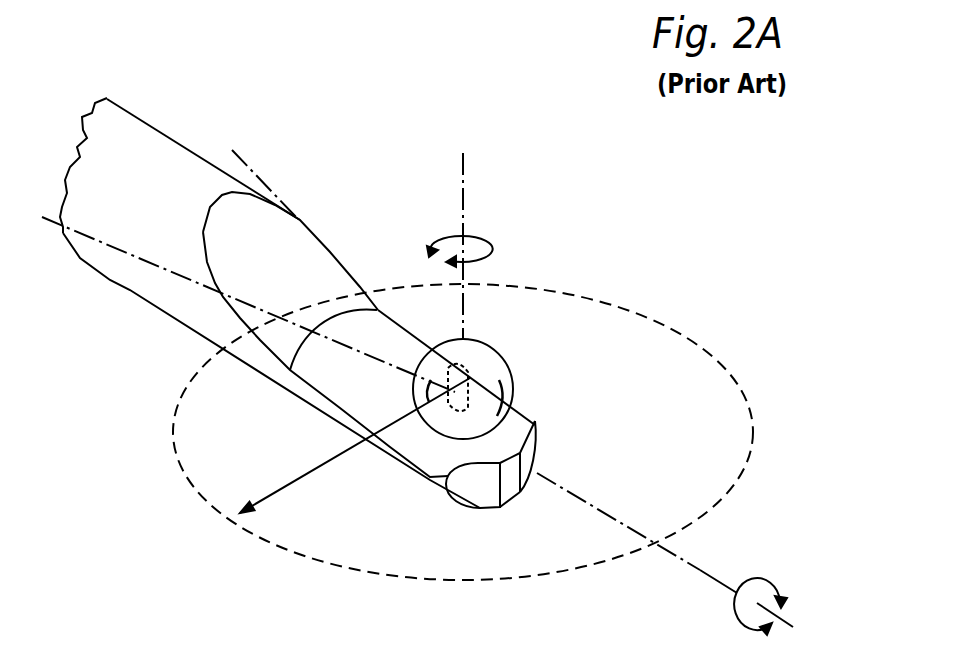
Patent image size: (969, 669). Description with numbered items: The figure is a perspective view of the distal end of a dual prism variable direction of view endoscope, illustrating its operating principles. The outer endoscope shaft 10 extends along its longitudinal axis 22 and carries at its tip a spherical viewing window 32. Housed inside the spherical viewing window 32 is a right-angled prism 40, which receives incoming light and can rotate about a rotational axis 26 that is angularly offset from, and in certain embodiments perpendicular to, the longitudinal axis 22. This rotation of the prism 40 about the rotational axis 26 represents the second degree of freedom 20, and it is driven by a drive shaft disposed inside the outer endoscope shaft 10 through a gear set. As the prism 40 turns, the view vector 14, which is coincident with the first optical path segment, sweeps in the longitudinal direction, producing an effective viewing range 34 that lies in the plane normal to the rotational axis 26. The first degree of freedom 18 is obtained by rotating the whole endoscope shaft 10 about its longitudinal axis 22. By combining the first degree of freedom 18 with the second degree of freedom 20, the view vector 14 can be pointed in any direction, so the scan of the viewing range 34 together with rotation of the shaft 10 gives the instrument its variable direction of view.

The outer endoscope shaft 10 is at (180, 155).
The view vector 14 is at (309, 477).
The first degree of freedom 18 is at (737, 607).
The second degree of freedom 20 is at (492, 244).
The longitudinal axis 22 is at (694, 560).
The rotational axis 26 is at (466, 184).
The spherical viewing window 32 is at (518, 379).
The viewing range 34 is at (670, 333).
The right-angled prism 40 is at (482, 380).